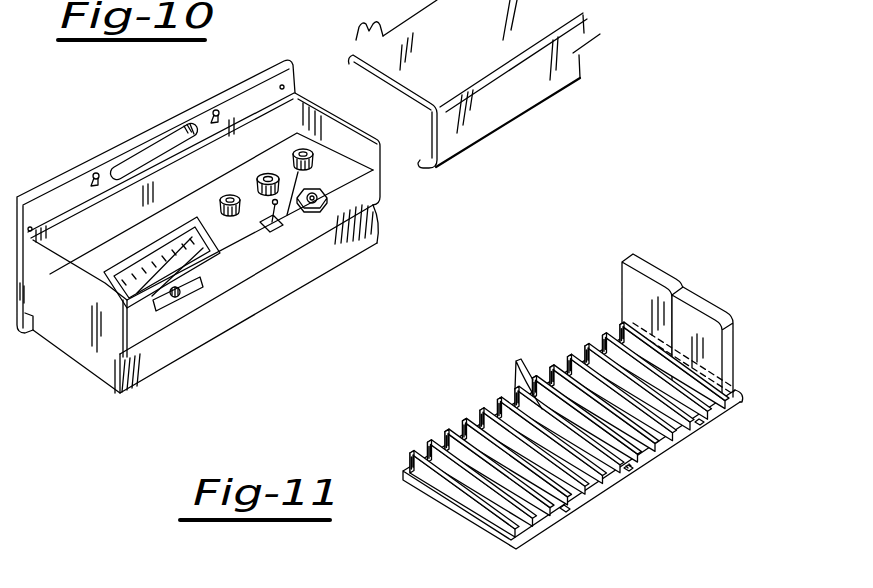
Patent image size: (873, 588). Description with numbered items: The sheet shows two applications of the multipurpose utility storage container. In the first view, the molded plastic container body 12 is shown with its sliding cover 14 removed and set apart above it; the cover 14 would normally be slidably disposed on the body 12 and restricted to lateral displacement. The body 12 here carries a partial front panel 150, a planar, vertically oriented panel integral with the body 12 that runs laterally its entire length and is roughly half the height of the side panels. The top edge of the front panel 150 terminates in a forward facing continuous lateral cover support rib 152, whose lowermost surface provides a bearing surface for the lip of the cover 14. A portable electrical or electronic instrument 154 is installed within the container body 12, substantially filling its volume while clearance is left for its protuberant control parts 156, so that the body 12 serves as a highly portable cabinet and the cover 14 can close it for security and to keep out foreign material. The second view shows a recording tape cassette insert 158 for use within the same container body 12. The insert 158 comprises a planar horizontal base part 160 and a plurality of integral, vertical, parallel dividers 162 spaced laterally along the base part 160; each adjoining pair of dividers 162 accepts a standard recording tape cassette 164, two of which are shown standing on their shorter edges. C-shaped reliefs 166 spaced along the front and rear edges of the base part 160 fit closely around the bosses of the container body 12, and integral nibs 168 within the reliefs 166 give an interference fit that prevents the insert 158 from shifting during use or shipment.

In FIG. 10, the container body 12 is at (72, 170).
In FIG. 10, the cover 14 is at (478, 42).
In FIG. 10, the partial front panel 150 is at (268, 288).
In FIG. 10, the cover support rib 152 is at (100, 375).
In FIG. 10, the portable electrical or electronic instrument 154 is at (255, 256).
In FIG. 10, the protuberant control parts 156 is at (278, 192).
In FIG. 11, the recording tape cassette insert 158 is at (463, 527).
In FIG. 11, the base part 160 is at (740, 393).
In FIG. 11, the dividers 162 is at (522, 384).
In FIG. 11, the recording tape cassette 164 is at (663, 275).
In FIG. 11, the C-shaped reliefs 166 is at (456, 440).
In FIG. 11, the nibs 168 is at (630, 470).